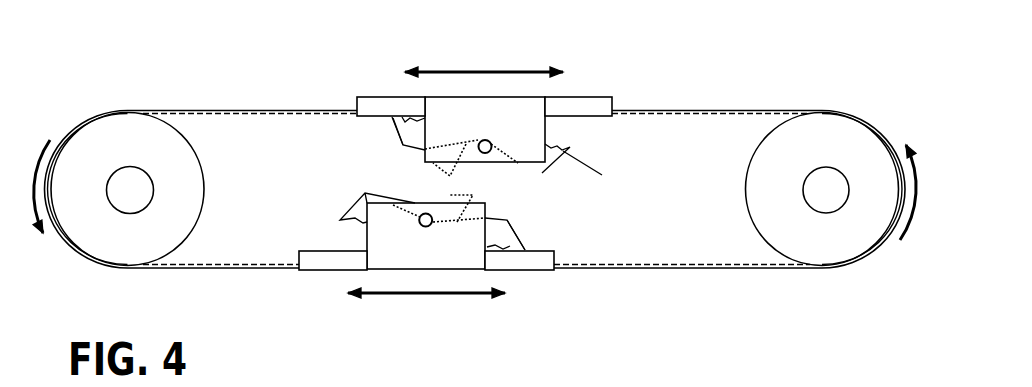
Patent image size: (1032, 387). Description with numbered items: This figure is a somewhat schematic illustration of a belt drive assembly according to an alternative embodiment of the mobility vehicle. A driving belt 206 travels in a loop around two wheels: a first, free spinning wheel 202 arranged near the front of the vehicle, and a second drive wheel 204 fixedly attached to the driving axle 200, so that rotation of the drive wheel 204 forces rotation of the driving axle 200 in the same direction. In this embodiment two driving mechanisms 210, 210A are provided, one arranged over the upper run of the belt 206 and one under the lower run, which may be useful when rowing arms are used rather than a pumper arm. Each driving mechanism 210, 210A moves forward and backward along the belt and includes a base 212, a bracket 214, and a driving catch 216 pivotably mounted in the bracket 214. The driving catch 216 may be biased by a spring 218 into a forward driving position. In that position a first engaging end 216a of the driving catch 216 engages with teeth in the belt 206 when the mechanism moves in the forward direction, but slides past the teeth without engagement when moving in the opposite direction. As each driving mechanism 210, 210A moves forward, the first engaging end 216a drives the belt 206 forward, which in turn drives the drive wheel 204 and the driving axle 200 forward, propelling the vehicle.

The driving axle 200 is at (830, 186).
The first free spinning wheel 202 is at (205, 193).
The drive wheel 204 is at (747, 222).
The driving belt 206 is at (677, 110).
The driving mechanism 210 is at (588, 61).
The second driving mechanism 210A is at (324, 287).
The base 212 is at (366, 96).
The bracket 214 is at (497, 163).
The driving catch 216 is at (571, 149).
The first engaging end 216a is at (386, 124).
The spring 218 is at (455, 181).